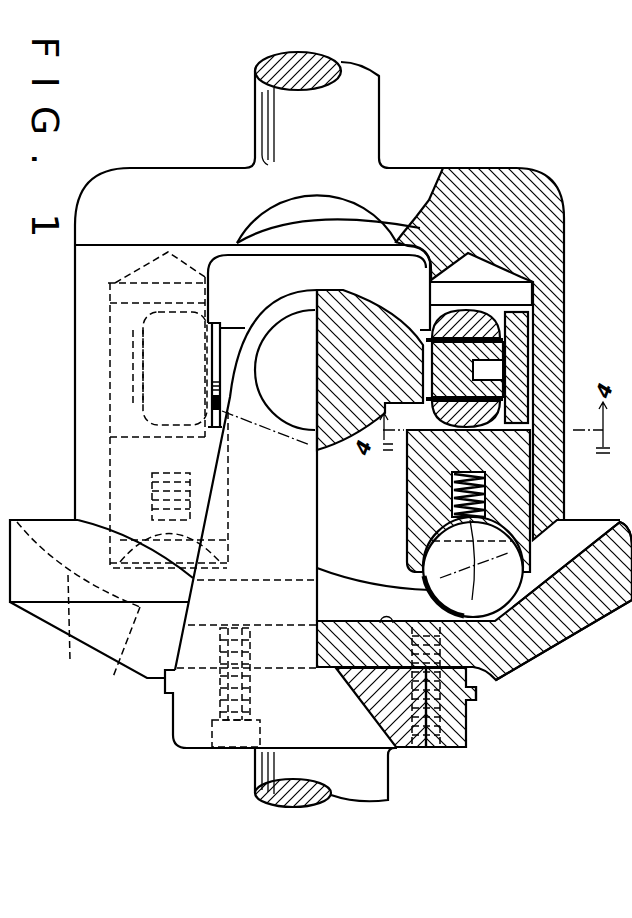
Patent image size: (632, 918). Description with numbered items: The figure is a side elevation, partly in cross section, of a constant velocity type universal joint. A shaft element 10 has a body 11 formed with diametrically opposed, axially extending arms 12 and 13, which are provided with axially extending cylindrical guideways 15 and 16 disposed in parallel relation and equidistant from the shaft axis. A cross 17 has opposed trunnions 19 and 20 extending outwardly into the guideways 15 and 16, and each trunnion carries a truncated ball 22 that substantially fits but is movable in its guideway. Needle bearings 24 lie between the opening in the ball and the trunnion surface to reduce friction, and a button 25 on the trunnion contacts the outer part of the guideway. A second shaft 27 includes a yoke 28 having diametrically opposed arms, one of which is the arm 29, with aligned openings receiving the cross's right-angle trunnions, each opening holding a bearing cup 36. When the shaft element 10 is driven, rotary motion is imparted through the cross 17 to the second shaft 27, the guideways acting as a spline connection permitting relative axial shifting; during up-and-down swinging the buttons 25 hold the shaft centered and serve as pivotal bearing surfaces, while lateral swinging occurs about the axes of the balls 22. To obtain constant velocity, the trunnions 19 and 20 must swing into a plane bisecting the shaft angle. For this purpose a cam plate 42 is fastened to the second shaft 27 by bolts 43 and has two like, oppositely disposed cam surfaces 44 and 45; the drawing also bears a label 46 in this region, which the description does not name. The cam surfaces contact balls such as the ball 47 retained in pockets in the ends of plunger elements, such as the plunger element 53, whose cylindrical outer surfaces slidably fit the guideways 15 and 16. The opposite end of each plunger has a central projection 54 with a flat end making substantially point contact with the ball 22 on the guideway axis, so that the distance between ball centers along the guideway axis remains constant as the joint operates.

The shaft element 10 is at (258, 117).
The body 11 is at (518, 183).
The arm 12 is at (530, 383).
The arm 13 is at (80, 347).
The cylindrical guideway 15 is at (530, 330).
The cylindrical guideway 16 is at (108, 450).
The cross 17 is at (349, 295).
The trunnion 19 is at (319, 292).
The trunnion 20 is at (238, 333).
The truncated ball 22 is at (433, 318).
The needle bearings 24 is at (492, 442).
The button 25 is at (490, 407).
The second shaft 27 is at (385, 782).
The yoke 28 is at (175, 733).
The arm 29 is at (344, 455).
The bearing cup 36 is at (297, 402).
The cam plate 42 is at (503, 676).
The bolts 43 is at (474, 722).
The cam surface 44 is at (412, 682).
The cam surface 45 is at (72, 605).
The bracket 46 is at (118, 640).
The ball 47 is at (532, 655).
The plunger element 53 is at (473, 567).
The central projection 54 is at (440, 447).